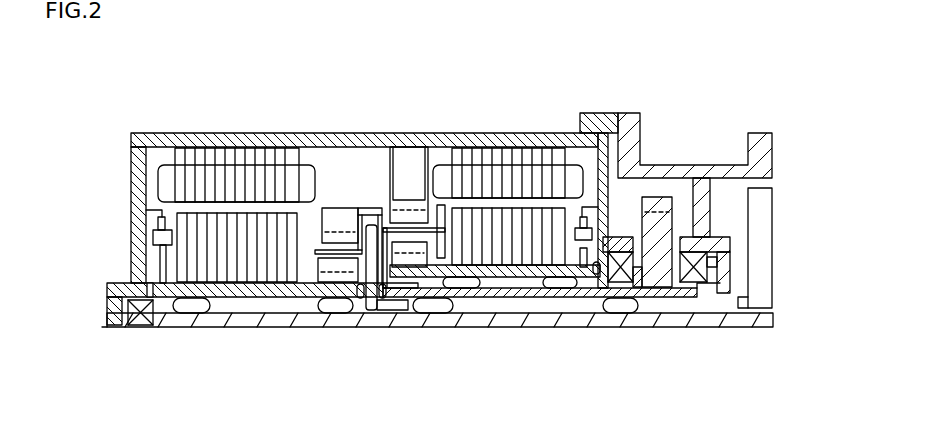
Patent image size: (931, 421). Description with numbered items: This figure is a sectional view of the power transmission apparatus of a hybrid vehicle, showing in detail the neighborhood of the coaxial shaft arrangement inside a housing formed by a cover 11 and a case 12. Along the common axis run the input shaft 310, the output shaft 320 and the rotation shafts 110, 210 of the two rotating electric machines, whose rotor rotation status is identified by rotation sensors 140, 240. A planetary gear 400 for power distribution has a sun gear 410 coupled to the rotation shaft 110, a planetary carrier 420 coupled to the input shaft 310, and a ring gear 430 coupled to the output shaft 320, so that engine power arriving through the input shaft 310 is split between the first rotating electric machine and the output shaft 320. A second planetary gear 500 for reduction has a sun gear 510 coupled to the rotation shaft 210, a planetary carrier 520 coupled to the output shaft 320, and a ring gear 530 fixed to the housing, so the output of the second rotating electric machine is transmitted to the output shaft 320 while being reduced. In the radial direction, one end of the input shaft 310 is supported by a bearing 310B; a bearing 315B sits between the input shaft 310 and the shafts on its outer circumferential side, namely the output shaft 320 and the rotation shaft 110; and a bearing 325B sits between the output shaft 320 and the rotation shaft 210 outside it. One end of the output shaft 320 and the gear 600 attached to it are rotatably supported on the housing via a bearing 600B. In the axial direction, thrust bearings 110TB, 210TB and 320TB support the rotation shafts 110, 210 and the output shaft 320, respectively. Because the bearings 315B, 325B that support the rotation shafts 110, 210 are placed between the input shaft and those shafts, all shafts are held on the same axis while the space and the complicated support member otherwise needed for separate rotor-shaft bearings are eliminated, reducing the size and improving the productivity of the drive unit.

The cover 11 is at (763, 163).
The case 12 is at (372, 133).
The rotation shaft 110 is at (267, 290).
The thrust bearing 110TB is at (150, 283).
The rotation sensor 140 is at (153, 237).
The rotation shaft 210 is at (507, 292).
The thrust bearing 210TB is at (385, 133).
The rotation sensor 240 is at (567, 278).
The input shaft 310 is at (680, 319).
The bearing 310B is at (142, 313).
The bearing 315B is at (198, 308).
The output shaft 320 is at (657, 298).
The thrust bearing 320TB is at (381, 299).
The bearing 325B is at (463, 285).
The planetary gear 400 is at (158, 68).
The sun gear 410 is at (318, 275).
The planetary carrier 420 is at (318, 248).
The ring gear 430 is at (337, 213).
The planetary gear 500 is at (427, 68).
The sun gear 510 is at (440, 245).
The planetary carrier 520 is at (412, 255).
The ring gear 530 is at (412, 208).
The gear 600 is at (663, 223).
The bearing 600B is at (703, 263).